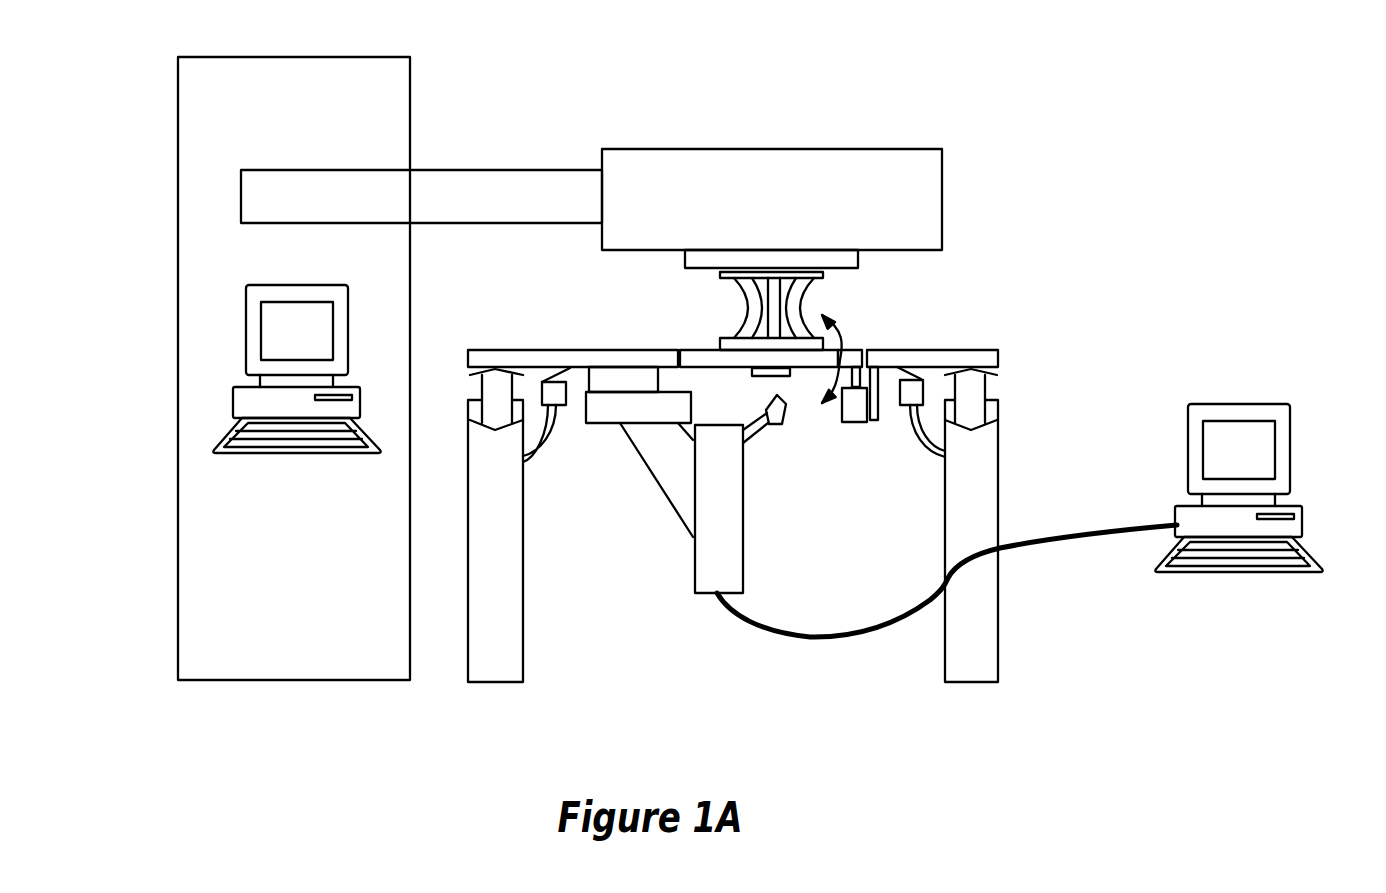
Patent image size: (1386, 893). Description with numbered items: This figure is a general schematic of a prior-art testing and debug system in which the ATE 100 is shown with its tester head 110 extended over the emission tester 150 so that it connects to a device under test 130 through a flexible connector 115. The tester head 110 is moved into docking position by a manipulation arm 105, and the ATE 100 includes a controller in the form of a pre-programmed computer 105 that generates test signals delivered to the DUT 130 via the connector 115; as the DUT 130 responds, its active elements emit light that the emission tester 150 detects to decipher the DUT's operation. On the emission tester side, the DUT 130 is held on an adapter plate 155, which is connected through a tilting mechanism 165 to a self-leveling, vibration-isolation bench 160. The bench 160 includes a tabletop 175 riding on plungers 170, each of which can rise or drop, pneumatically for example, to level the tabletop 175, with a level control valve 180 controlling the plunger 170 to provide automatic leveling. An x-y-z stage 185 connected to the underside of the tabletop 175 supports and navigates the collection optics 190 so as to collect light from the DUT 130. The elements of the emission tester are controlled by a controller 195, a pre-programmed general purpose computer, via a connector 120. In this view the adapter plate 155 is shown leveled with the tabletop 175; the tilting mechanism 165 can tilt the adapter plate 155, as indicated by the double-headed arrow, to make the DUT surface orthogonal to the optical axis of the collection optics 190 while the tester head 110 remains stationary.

The ATE 100 is at (270, 144).
The manipulation arm 105 is at (405, 217).
The tester head 110 is at (738, 217).
The flexible connector 115 is at (803, 298).
The connector 120 is at (1023, 537).
The device under test 130 is at (788, 378).
The emission tester 150 is at (1032, 285).
The adapter plate 155 is at (690, 350).
The self-leveling, vibration-isolation bench 160 is at (1015, 337).
The tilting mechanism 165 is at (855, 407).
The plunger 170 is at (984, 391).
The tabletop 175 is at (549, 350).
The level control valve 180 is at (560, 403).
The x-y-z stage 185 is at (639, 452).
The collection optics 190 is at (777, 423).
The controller 195 is at (1215, 467).